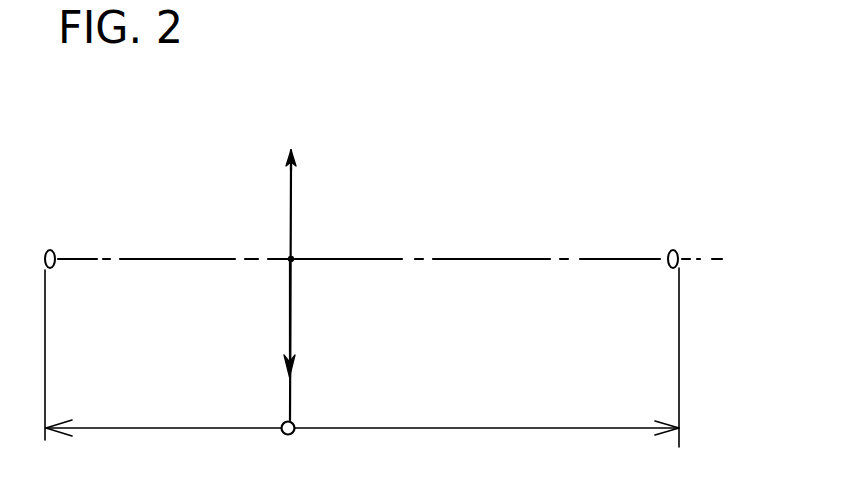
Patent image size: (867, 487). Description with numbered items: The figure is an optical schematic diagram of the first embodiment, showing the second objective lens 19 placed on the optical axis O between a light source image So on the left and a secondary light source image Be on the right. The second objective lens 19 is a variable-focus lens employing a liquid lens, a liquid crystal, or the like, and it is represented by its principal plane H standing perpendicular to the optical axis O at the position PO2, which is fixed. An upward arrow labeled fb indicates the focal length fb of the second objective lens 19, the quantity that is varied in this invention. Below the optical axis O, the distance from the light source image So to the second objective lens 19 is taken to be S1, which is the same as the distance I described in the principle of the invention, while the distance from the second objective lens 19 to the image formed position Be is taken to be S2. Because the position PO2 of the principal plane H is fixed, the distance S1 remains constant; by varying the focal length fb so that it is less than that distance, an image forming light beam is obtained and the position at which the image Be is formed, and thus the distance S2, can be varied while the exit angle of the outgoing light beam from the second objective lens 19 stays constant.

The second objective lens 19 is at (294, 185).
The optical axis O is at (527, 258).
The light source image So is at (58, 239).
The secondary light source image Be is at (684, 242).
The focal length of the second objective lens fb is at (294, 144).
The principal plane H is at (290, 318).
The position of the principal plane PO2 is at (291, 259).
The distance from light source image to second objective lens S1 is at (164, 414).
The distance from second objective lens to image formed position S2 is at (486, 413).